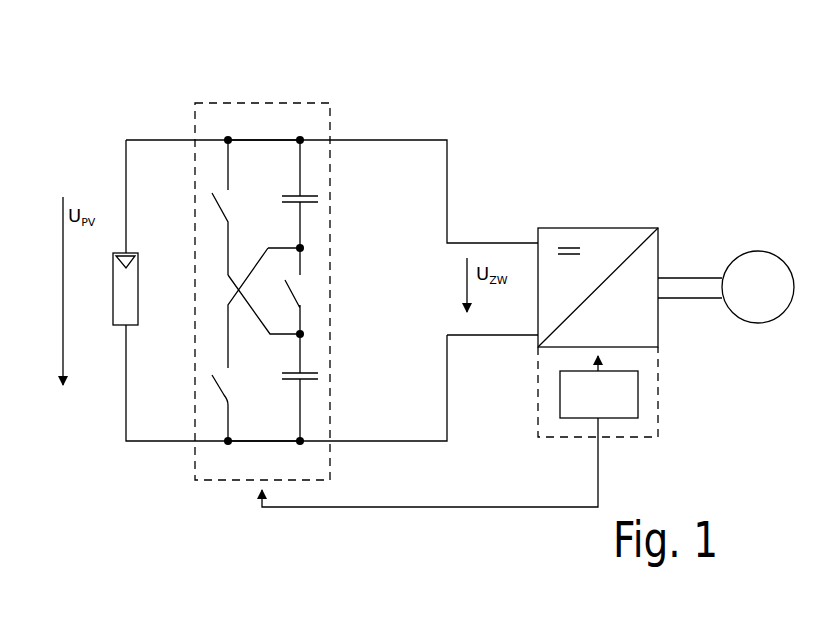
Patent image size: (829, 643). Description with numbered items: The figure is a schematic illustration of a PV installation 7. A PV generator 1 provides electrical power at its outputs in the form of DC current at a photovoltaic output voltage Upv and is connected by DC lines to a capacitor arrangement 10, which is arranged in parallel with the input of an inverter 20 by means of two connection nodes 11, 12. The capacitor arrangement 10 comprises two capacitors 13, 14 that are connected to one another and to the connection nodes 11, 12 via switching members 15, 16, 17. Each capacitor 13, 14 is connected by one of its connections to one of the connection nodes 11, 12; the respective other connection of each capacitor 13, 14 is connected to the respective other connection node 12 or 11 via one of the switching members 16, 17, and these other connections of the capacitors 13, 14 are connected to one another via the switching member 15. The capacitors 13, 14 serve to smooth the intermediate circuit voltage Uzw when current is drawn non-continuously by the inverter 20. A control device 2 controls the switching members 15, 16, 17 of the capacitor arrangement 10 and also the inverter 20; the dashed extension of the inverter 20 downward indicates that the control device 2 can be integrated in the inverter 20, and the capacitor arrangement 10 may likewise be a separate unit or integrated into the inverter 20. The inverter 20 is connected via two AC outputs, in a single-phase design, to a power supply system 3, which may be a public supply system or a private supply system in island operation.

The PV generator 1 is at (115, 325).
The control device 2 is at (638, 400).
The power supply system 3 is at (748, 252).
The PV installation 7 is at (547, 97).
The capacitor arrangement 10 is at (240, 103).
The connection node 11 is at (266, 140).
The connection node 12 is at (252, 443).
The capacitor 13 is at (318, 193).
The capacitor 14 is at (318, 373).
The switching member 15 is at (302, 298).
The switching member 16 is at (222, 215).
The switching member 17 is at (212, 390).
The inverter 20 is at (585, 228).